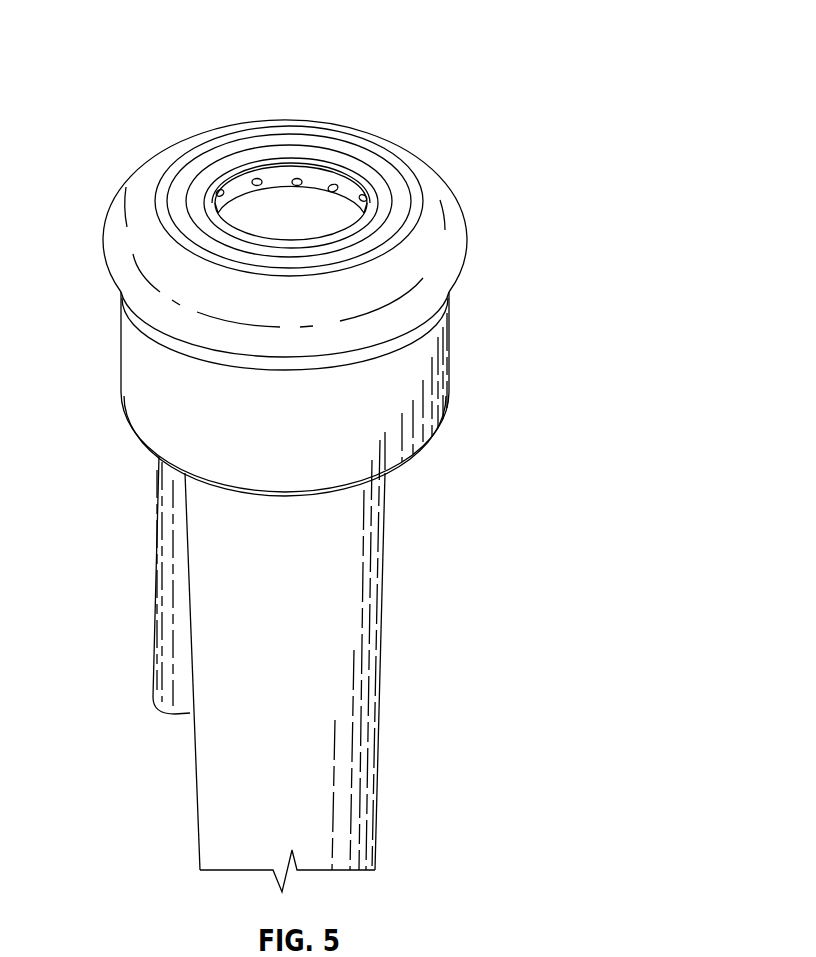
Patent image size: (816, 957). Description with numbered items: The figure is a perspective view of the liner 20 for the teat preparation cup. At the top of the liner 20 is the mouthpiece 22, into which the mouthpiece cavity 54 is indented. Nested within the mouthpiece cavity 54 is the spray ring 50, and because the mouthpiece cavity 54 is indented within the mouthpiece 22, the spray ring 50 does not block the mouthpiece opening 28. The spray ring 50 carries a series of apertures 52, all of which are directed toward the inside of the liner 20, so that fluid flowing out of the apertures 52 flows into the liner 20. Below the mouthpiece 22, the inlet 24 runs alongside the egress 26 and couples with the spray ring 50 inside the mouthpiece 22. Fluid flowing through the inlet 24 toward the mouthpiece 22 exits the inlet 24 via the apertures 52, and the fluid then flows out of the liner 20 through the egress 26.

The liner 20 is at (283, 471).
The mouthpiece 22 is at (309, 278).
The inlet 24 is at (171, 560).
The egress 26 is at (349, 583).
The mouthpiece opening 28 is at (334, 210).
The spray ring 50 is at (318, 173).
The apertures 52 is at (297, 178).
The mouthpiece cavity 54 is at (451, 251).